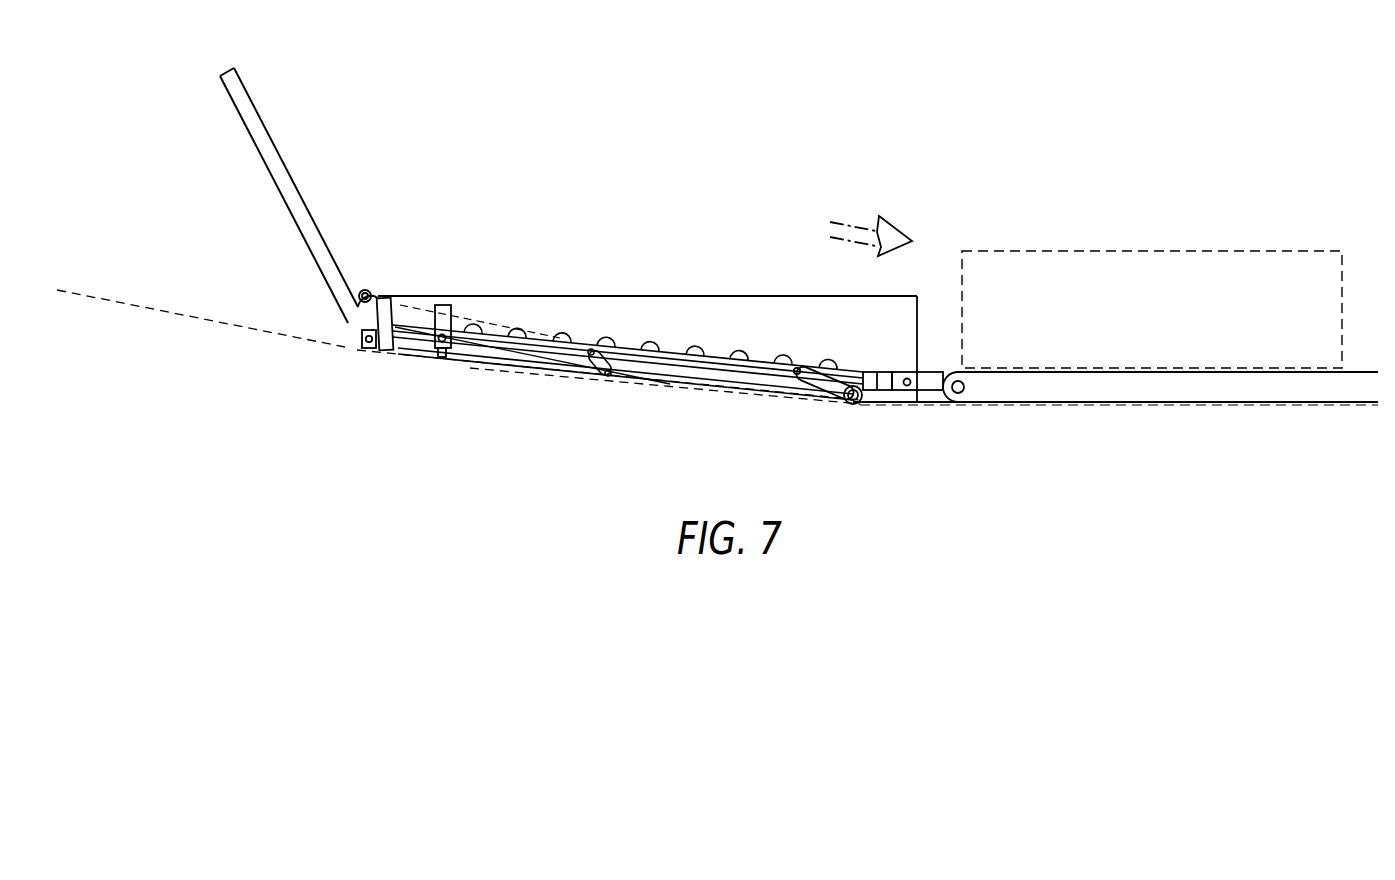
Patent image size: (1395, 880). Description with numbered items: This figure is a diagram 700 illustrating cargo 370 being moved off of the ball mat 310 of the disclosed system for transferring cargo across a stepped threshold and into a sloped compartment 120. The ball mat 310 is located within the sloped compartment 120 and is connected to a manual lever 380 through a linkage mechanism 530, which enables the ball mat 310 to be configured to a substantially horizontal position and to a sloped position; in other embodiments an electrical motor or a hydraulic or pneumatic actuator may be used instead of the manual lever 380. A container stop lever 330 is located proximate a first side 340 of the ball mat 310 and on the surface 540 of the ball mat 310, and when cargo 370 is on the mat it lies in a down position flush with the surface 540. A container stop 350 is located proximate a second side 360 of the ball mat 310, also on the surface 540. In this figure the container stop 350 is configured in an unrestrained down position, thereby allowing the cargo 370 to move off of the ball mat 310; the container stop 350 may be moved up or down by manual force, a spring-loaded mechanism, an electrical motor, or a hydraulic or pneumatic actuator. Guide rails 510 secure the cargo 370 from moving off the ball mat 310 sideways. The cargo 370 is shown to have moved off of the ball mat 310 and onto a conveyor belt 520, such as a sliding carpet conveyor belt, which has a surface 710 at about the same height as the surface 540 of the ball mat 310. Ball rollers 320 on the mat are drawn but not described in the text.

The sloped compartment 120 is at (132, 238).
The manual lever 380 is at (281, 192).
The first side 340 is at (355, 328).
The guide rails 510 is at (405, 308).
The container stop lever 330 is at (444, 305).
The rollers 320 is at (560, 337).
The linkage mechanism 530 is at (697, 378).
The surface 540 is at (847, 357).
The ball mat 310 is at (846, 403).
The container stop 350 is at (932, 382).
The second side 360 is at (923, 325).
The conveyor belt 520 is at (1055, 388).
The surface 710 is at (1141, 368).
The cargo 370 is at (1112, 280).
The diagram 700 is at (1063, 519).